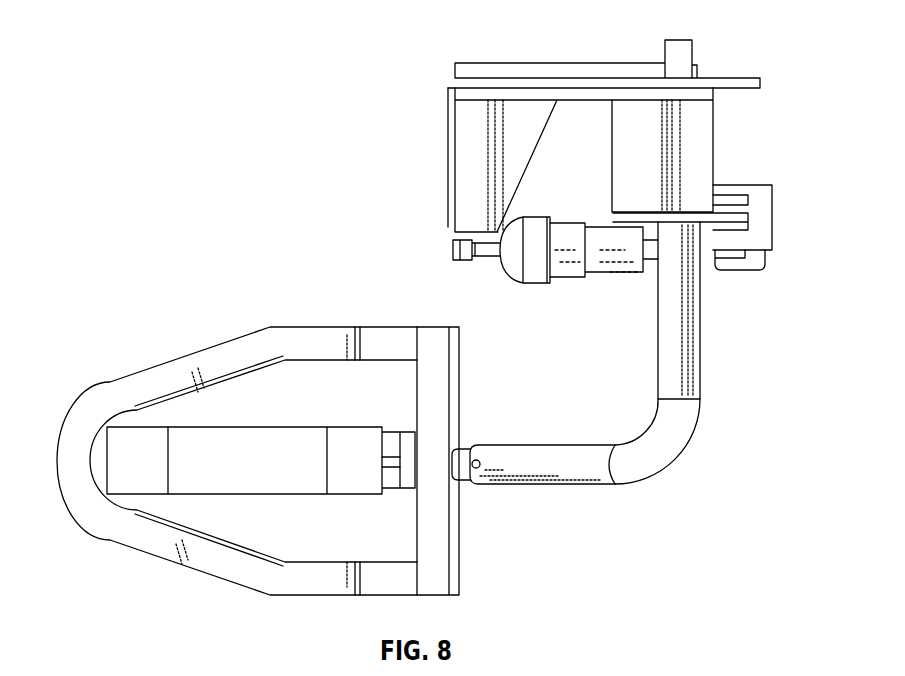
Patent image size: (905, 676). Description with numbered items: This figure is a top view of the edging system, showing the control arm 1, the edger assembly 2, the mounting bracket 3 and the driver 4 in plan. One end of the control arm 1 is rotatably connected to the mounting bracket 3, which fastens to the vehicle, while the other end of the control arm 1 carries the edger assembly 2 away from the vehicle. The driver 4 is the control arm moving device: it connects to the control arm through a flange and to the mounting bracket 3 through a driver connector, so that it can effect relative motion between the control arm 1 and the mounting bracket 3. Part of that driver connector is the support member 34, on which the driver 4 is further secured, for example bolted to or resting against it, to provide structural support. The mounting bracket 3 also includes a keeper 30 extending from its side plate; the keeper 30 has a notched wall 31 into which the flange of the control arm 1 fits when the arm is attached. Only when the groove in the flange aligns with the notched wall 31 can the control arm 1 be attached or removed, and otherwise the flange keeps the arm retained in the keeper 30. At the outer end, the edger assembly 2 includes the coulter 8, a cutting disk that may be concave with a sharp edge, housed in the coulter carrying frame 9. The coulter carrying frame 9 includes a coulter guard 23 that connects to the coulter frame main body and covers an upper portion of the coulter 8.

The control arm 1 is at (701, 311).
The edger assembly 2 is at (460, 557).
The mounting bracket 3 is at (455, 82).
The driver 4 is at (493, 256).
The coulter 8 is at (392, 457).
The coulter carrying frame 9 is at (408, 478).
The coulter guard 23 is at (100, 477).
The keeper 30 is at (773, 218).
The notched wall 31 is at (748, 226).
The support member 34 is at (473, 172).